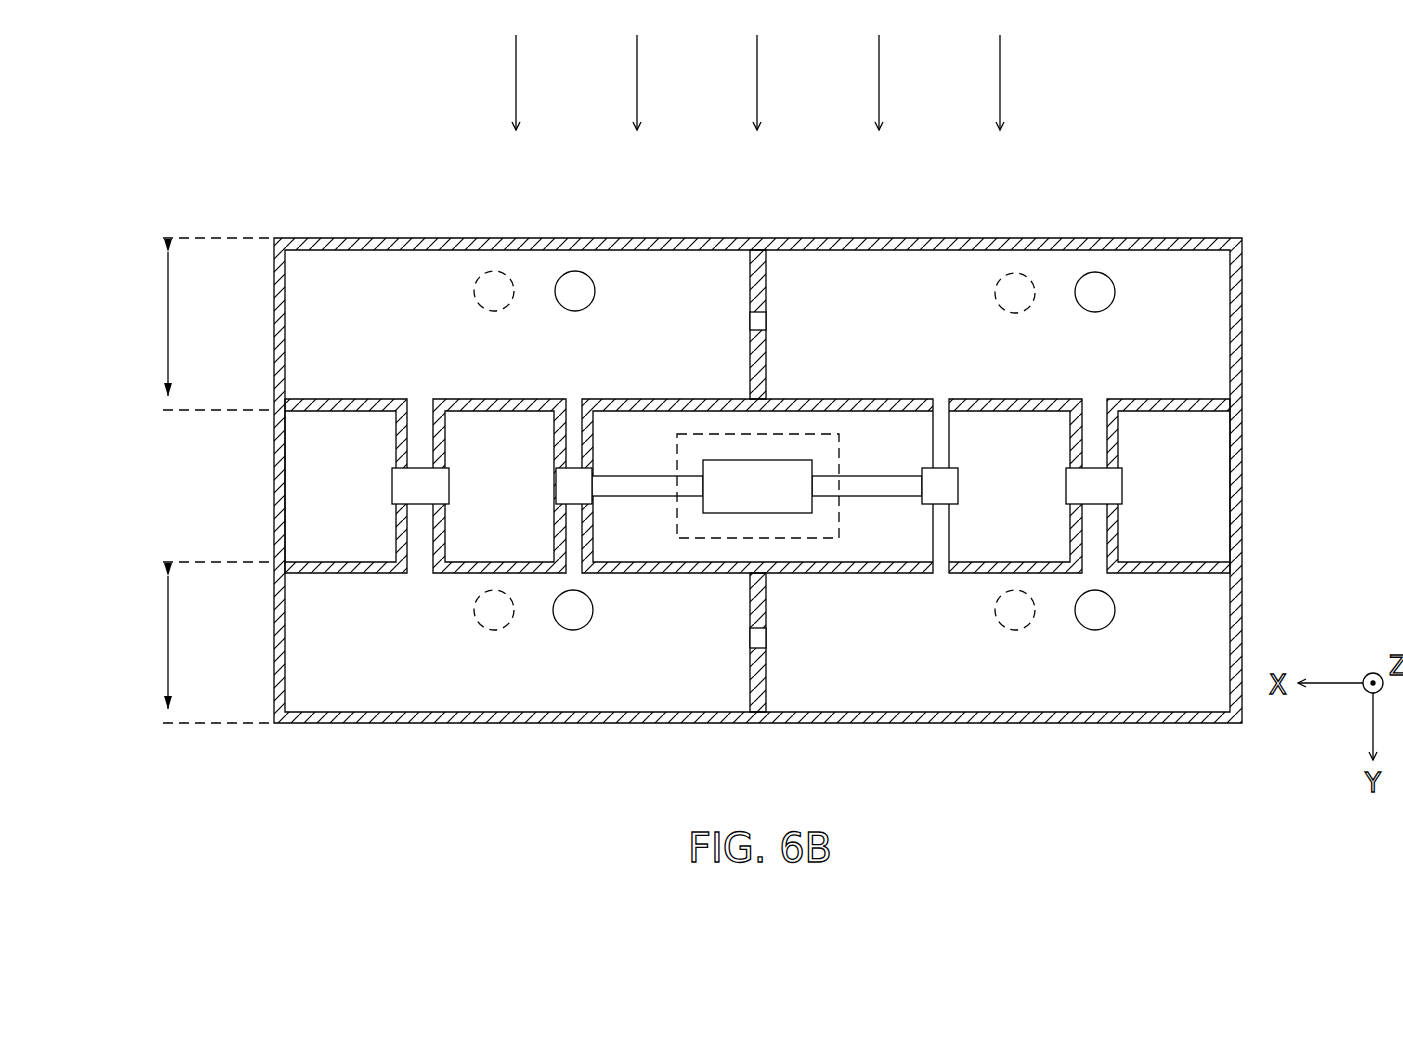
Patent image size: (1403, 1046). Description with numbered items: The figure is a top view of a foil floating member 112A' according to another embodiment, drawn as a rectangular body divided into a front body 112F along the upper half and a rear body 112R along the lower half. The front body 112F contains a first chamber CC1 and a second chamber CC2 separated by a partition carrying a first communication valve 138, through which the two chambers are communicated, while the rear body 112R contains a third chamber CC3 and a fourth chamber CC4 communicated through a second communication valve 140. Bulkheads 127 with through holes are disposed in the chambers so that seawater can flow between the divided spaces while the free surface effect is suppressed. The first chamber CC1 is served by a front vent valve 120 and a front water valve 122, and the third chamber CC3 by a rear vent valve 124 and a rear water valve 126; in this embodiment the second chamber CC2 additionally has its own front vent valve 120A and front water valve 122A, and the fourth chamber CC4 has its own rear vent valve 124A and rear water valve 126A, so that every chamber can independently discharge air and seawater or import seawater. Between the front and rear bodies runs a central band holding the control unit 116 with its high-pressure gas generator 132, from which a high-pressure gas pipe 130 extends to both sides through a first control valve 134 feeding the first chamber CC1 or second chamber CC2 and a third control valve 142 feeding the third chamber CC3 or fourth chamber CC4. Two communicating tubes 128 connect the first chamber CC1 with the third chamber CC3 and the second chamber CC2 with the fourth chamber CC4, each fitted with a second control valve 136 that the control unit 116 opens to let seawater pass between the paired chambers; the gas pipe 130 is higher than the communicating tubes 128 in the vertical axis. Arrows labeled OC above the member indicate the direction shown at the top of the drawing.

The foil floating member 112A' is at (795, 445).
The front body 112F is at (185, 324).
The rear body 112R is at (184, 642).
The control unit 116 is at (700, 434).
The front vent valve 120 is at (572, 292).
The front vent valve 120A is at (1096, 292).
The front water valve 122 is at (493, 288).
The front water valve 122A is at (1016, 290).
The rear vent valve 124 is at (573, 612).
The rear vent valve 124A is at (1095, 612).
The rear water valve 126 is at (494, 630).
The rear water valve 126A is at (1015, 630).
The bulkhead 127 is at (757, 320).
The communicating tube 128 is at (420, 528).
The high-pressure gas pipe 130 is at (942, 427).
The high-pressure gas generator 132 is at (788, 487).
The first control valve 134 is at (576, 486).
The second control valve 136 is at (420, 487).
The first communication valve 138 is at (767, 288).
The second communication valve 140 is at (752, 700).
The third control valve 142 is at (942, 505).
The first chamber CC1 is at (364, 280).
The second chamber CC2 is at (1190, 292).
The third chamber CC3 is at (364, 685).
The fourth chamber CC4 is at (1190, 604).
The optical coating / incident light OC is at (1002, 82).